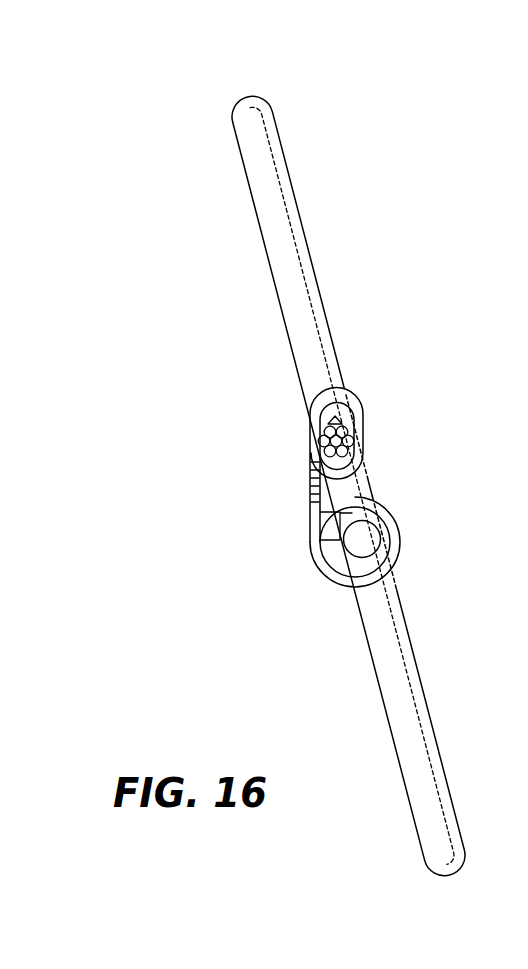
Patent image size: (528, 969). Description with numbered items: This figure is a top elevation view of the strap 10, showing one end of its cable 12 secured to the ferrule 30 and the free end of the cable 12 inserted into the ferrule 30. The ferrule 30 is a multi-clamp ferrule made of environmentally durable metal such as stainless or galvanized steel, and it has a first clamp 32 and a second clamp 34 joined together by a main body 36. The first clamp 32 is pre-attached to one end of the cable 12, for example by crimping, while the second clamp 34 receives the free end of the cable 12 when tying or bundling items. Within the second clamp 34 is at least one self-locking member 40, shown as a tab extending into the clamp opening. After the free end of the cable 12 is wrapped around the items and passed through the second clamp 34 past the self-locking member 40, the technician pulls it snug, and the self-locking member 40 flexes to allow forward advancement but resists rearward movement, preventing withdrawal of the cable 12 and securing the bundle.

The strap 10 is at (373, 127).
The cable 12 is at (353, 677).
The ferrule 30 is at (295, 467).
The first clamp 32 is at (365, 412).
The second clamp 34 is at (398, 535).
The main body 36 is at (307, 483).
The self-locking member 40 is at (311, 533).